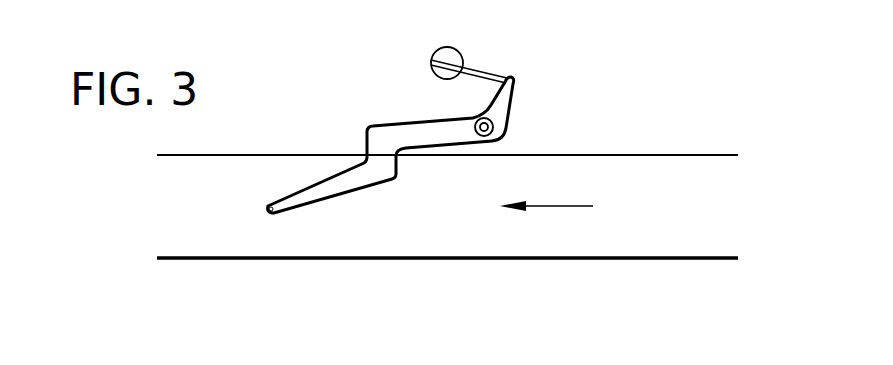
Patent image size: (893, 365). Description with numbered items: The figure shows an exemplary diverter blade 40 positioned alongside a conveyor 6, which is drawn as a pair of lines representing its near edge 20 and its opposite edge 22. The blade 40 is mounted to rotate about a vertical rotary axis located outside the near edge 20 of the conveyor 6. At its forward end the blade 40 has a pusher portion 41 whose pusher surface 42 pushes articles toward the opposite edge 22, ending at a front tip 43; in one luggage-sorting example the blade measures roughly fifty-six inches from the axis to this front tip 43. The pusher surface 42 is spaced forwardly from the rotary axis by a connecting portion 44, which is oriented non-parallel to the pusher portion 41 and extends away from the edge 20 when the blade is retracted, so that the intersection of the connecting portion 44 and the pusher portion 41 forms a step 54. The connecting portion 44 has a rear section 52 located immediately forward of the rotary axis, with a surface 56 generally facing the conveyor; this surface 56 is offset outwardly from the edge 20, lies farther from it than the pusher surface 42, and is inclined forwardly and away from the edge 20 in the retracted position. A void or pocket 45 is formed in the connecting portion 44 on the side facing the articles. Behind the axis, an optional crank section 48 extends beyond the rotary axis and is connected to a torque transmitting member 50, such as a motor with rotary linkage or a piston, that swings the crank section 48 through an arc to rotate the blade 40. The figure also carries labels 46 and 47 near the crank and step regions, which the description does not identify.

The conveyor 6 is at (612, 177).
The edge of the conveyor 20 is at (680, 152).
The opposite edge of the conveyor 22 is at (567, 261).
The diverter blade 40 is at (357, 124).
The pusher portion 41 is at (305, 172).
The pusher surface 42 is at (343, 197).
The front tip 43 is at (268, 212).
The connecting portion 44 is at (395, 118).
The void or pocket 45 is at (438, 172).
The pivot pin 46 is at (494, 122).
The inner edge of hook 47 is at (396, 182).
The crank section 48 is at (507, 92).
The torque transmitting member 50 is at (466, 67).
The rear section 52 is at (443, 130).
The step 54 is at (386, 153).
The surface of the connecting portion 56 is at (462, 143).